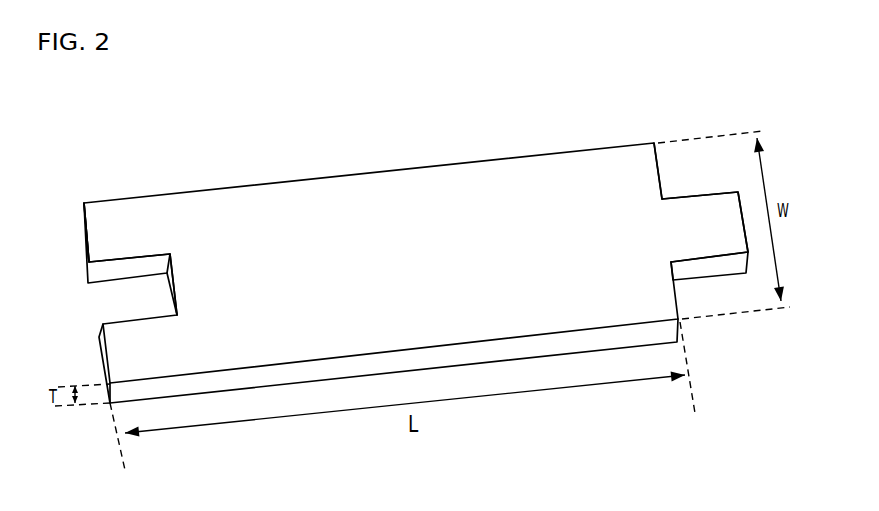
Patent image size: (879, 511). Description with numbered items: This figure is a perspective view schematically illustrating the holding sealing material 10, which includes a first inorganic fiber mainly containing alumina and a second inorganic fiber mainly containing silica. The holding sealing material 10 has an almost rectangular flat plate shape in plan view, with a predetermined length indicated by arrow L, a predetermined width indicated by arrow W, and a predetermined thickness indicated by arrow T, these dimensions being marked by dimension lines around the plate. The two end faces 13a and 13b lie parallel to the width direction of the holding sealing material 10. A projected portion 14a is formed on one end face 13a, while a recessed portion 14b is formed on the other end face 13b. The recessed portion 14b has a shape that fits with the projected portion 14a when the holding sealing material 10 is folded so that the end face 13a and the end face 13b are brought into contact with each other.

The holding sealing material 10 is at (392, 231).
The end face 13a is at (656, 160).
The end face 13b is at (85, 233).
The projected portion 14a is at (695, 218).
The recessed portion 14b is at (165, 264).